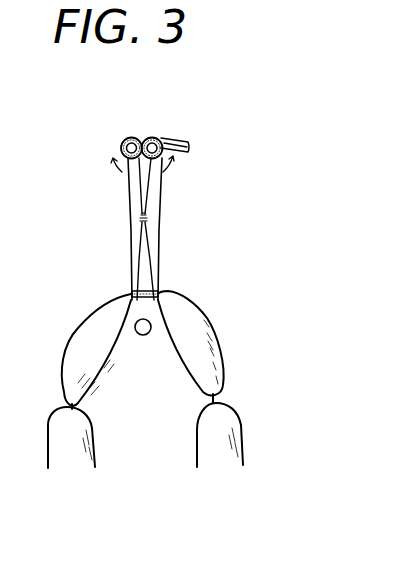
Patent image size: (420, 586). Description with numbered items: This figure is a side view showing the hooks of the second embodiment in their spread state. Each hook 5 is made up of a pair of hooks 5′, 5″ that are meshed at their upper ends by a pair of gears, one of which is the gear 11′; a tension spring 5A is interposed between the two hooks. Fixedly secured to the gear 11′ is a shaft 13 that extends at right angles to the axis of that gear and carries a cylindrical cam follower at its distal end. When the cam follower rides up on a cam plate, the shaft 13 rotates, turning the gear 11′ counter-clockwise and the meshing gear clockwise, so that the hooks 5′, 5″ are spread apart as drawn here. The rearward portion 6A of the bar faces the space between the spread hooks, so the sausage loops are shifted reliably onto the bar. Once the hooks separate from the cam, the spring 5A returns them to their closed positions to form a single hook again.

The gear 11′ is at (161, 136).
The shaft 13 is at (174, 138).
The tension spring 5A is at (145, 213).
The hook 5 is at (90, 232).
The hook 5′ is at (150, 232).
The rearward portion of bar 6A is at (142, 335).